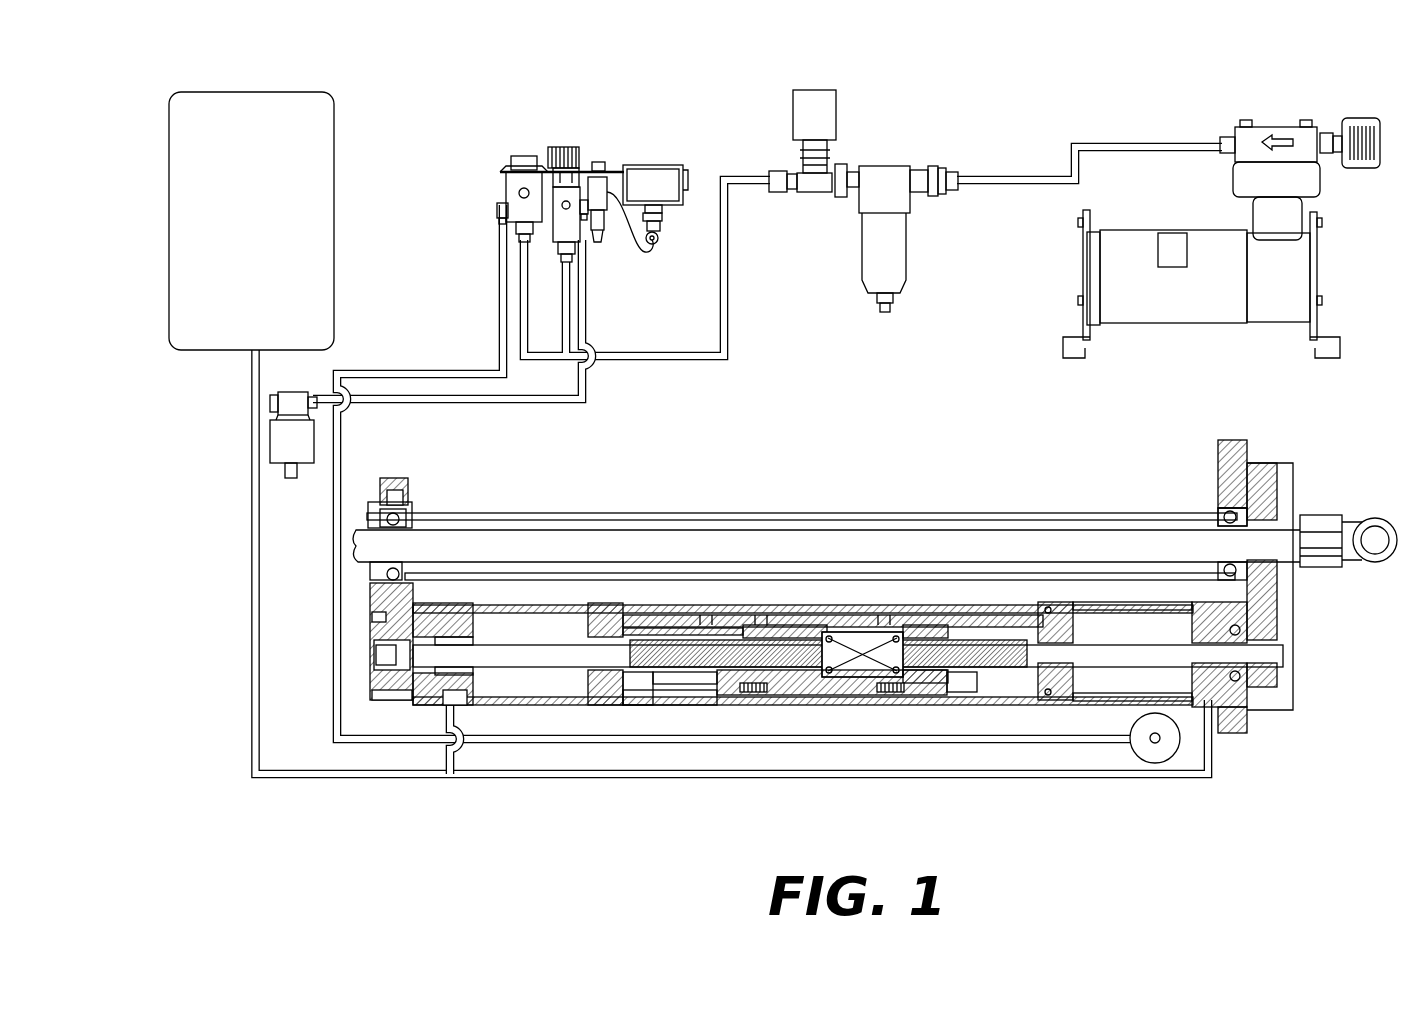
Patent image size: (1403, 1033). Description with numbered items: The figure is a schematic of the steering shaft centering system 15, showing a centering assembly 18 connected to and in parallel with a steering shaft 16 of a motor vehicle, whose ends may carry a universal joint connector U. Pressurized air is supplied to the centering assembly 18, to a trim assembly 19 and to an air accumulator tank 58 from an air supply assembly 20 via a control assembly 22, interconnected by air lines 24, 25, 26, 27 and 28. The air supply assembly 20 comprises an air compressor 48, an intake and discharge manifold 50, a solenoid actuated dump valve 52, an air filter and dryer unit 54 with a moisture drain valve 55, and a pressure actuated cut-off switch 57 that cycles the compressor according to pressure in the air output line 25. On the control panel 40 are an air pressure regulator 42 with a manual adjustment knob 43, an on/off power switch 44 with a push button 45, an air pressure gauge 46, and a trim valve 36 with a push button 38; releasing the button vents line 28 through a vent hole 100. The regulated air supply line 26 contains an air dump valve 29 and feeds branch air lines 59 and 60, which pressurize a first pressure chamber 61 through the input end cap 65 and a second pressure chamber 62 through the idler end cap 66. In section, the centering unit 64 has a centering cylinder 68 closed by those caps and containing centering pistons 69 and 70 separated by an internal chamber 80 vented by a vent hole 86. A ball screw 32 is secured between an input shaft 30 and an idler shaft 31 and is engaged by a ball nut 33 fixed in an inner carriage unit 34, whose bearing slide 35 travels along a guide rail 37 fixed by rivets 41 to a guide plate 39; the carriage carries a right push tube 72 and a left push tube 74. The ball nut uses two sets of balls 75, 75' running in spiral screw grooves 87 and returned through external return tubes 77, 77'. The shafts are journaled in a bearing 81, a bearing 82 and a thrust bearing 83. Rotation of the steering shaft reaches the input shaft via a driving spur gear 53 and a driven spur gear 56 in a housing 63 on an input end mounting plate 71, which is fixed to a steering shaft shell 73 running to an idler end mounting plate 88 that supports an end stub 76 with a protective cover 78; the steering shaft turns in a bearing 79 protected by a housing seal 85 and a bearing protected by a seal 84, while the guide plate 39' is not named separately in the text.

The steering shaft centering system 15 is at (1052, 832).
The steering shaft 16 is at (680, 530).
The centering assembly 18 is at (842, 443).
The trim assembly 19 is at (1120, 752).
The air supply assembly 20 is at (1225, 95).
The control assembly 22 is at (614, 66).
The air line 24 is at (1125, 147).
The air output line 25 is at (732, 248).
The regulated air supply line 26 is at (505, 402).
The air line 27 is at (250, 616).
The air line 28 is at (382, 370).
The air dump valve 29 is at (278, 438).
The input shaft 30 is at (1162, 666).
The idler shaft 31 is at (528, 660).
The ball screw 32 is at (630, 615).
The ball nut 33 is at (880, 680).
The inner carriage unit 34 is at (845, 680).
The bearing slide 35 is at (785, 615).
The trim valve 36 is at (512, 182).
The guide rail 37 is at (690, 615).
The push button 38 is at (514, 157).
The guide plate 39 is at (974, 585).
The bushing 39' is at (971, 747).
The control panel 40 is at (624, 168).
The rivets 41 is at (712, 620).
The air pressure regulator 42 is at (557, 222).
The manual adjustment knob 43 is at (568, 147).
The on/off power switch 44 is at (598, 232).
The push button 45 is at (599, 162).
The air pressure gauge 46 is at (655, 170).
The air compressor 48 is at (1172, 233).
The intake and discharge manifold 50 is at (1258, 127).
The solenoid actuated dump valve 52 is at (1358, 118).
The driving spur gear 53 is at (1290, 590).
The air filter and dryer unit 54 is at (908, 265).
The moisture drain valve 55 is at (880, 300).
The driven spur gear 56 is at (1278, 625).
The adjustable pressure actuated cut-off switch 57 is at (810, 98).
The air accumulator tank 58 is at (236, 228).
The branch air line 59 is at (485, 778).
The branch air line 60 is at (452, 775).
The first pressure chamber 61 is at (1108, 612).
The second pressure chamber 62 is at (516, 620).
The housing 63 is at (1262, 466).
The centering unit 64 is at (965, 710).
The input end cap 65 is at (1190, 620).
The idler end cap 66 is at (473, 682).
The centering cylinder 68 is at (780, 705).
The centering piston 69 is at (1073, 683).
The centering piston 70 is at (590, 618).
The input end mounting plate 71 is at (1222, 450).
The right push tube 72 is at (1050, 605).
The steering shaft shell 73 is at (525, 513).
The left push tube 74 is at (660, 705).
The balls 75 is at (943, 586).
The balls 75' is at (851, 586).
The end stub 76 is at (372, 655).
The external return tube 77 is at (897, 589).
The external return tube 77' is at (924, 754).
The protective cover 78 is at (370, 675).
The bearing 79 is at (1230, 522).
The internal chamber 80 is at (640, 705).
The bearing 81 is at (412, 512).
The bearing 82 is at (458, 605).
The thrust bearing 83 is at (430, 603).
The seal 84 is at (370, 572).
The housing seal 85 is at (1302, 520).
The vent hole 86 is at (725, 712).
The spiral screw groove 87 is at (690, 712).
The idler end mounting plate 88 is at (392, 478).
The vent hole 100 is at (519, 193).
The universal joint connector U is at (1393, 510).